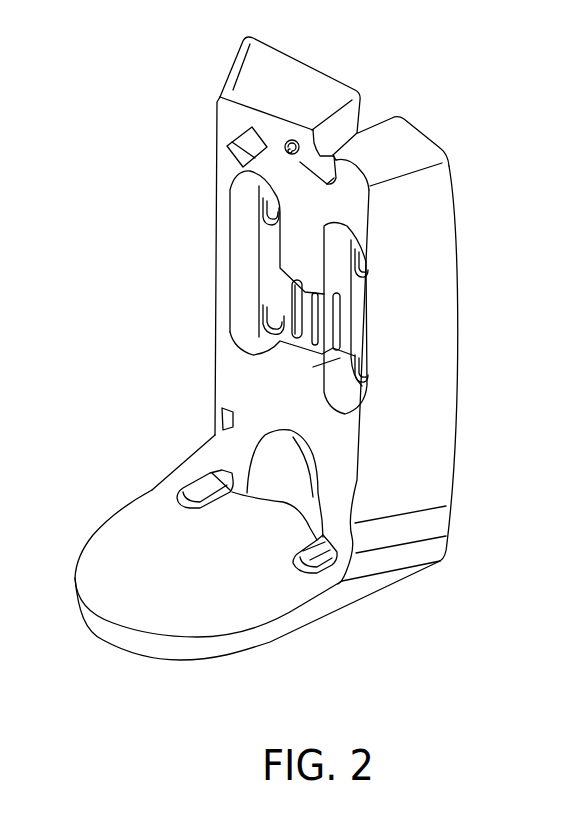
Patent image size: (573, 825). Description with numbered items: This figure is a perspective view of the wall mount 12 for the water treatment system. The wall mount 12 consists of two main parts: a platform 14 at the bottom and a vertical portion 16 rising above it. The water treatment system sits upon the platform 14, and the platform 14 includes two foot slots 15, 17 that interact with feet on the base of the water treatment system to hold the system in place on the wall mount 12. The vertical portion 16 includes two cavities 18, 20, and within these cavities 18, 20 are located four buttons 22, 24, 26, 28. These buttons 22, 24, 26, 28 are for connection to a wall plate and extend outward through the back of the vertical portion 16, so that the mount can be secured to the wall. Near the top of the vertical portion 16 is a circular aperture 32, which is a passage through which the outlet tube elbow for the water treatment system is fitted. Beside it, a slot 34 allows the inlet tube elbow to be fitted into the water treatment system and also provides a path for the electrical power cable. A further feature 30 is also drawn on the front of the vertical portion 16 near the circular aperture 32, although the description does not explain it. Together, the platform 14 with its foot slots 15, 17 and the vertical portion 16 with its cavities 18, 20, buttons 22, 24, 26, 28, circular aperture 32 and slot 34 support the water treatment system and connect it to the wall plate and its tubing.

The wall mount 12 is at (137, 155).
The platform 14 is at (93, 548).
The foot slot 15 is at (208, 492).
The vertical portion 16 is at (245, 70).
The foot slot 17 is at (301, 555).
The cavity 18 is at (238, 290).
The cavity 20 is at (357, 308).
The button 22 is at (262, 213).
The button 24 is at (262, 324).
The button 26 is at (367, 272).
The button 28 is at (367, 377).
The diamond indicia 30 is at (228, 140).
The circular aperture 32 is at (291, 141).
The slot 34 is at (338, 158).